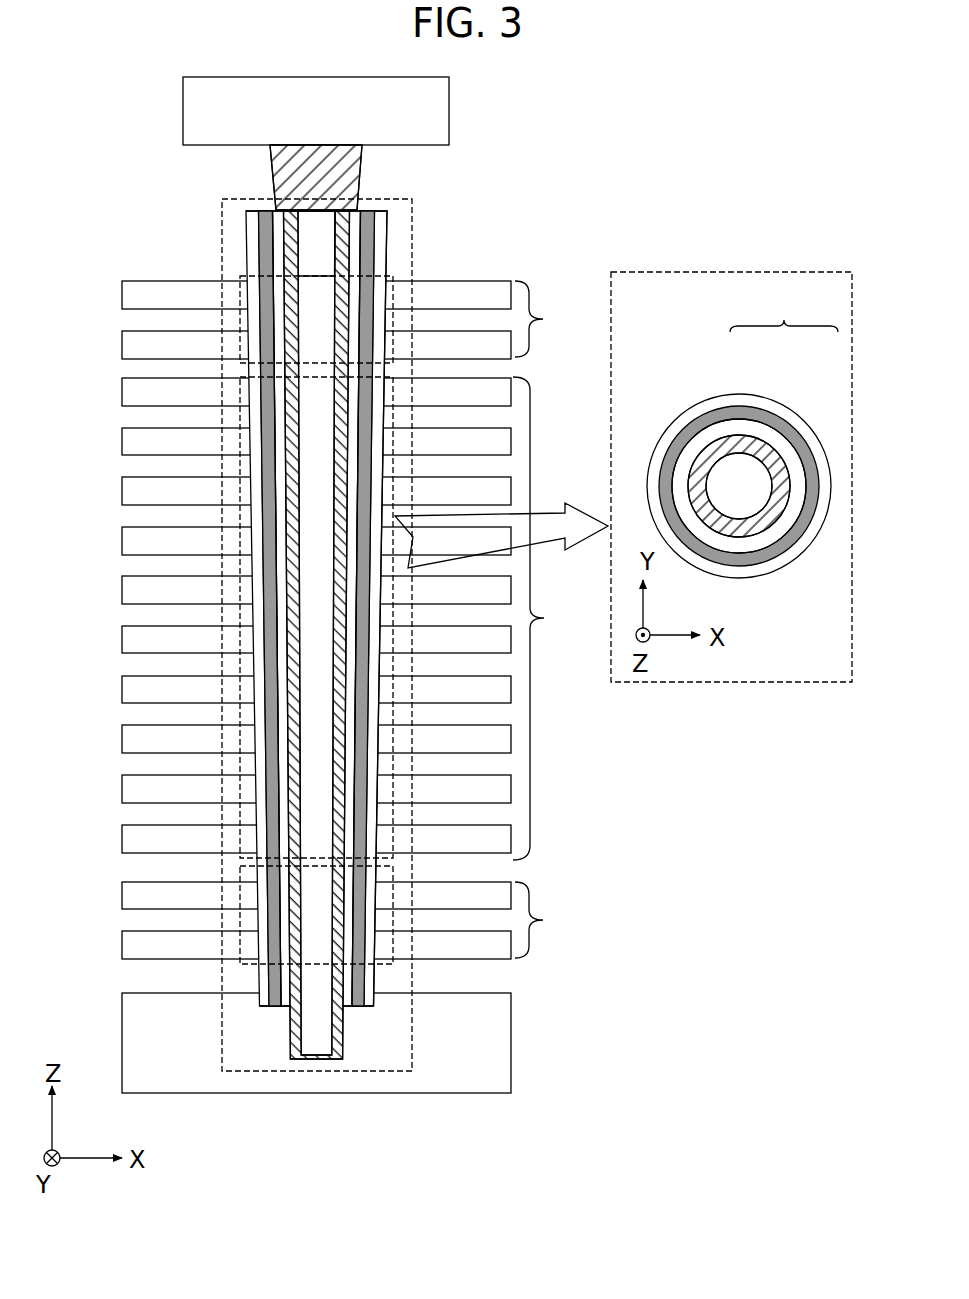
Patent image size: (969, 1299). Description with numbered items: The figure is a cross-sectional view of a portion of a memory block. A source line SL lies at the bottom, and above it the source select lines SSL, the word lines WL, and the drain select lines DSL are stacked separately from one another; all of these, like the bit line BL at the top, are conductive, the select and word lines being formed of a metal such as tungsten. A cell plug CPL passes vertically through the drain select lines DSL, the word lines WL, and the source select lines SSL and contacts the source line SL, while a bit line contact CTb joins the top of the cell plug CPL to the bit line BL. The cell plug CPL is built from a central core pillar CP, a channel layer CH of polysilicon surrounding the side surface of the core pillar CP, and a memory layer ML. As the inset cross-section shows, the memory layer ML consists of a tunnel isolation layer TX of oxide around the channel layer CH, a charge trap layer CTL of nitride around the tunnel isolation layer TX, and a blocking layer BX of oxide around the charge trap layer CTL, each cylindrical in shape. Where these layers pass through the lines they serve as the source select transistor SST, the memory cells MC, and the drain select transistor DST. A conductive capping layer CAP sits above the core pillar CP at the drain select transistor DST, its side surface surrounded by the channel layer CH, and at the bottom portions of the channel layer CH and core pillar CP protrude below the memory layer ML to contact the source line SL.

The bit line BL is at (440, 103).
The bit line contact CTb is at (360, 175).
The cell plug CPL is at (222, 223).
The capping layer CAP is at (322, 237).
The drain select transistor DST is at (240, 315).
The drain select lines DSL is at (354, 320).
The memory cell MC is at (240, 610).
The word lines WL is at (345, 618).
The source select transistor SST is at (240, 914).
The source select lines SSL is at (351, 920).
The source line SL is at (495, 1038).
The memory layer ML is at (784, 311).
The blocking layer BX is at (753, 398).
The charge trap layer CTL is at (767, 418).
The tunnel isolation layer TX is at (782, 450).
The channel layer CH is at (716, 450).
The core pillar CP is at (722, 475).